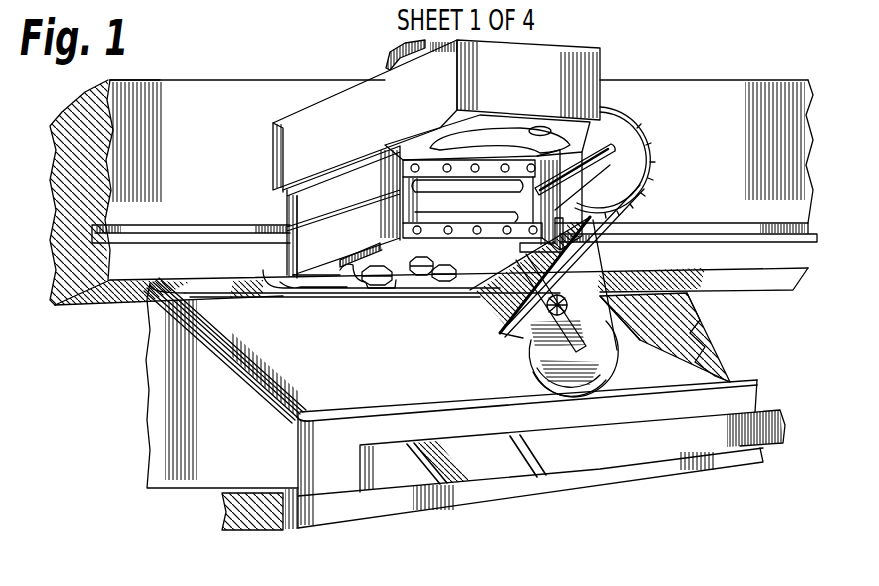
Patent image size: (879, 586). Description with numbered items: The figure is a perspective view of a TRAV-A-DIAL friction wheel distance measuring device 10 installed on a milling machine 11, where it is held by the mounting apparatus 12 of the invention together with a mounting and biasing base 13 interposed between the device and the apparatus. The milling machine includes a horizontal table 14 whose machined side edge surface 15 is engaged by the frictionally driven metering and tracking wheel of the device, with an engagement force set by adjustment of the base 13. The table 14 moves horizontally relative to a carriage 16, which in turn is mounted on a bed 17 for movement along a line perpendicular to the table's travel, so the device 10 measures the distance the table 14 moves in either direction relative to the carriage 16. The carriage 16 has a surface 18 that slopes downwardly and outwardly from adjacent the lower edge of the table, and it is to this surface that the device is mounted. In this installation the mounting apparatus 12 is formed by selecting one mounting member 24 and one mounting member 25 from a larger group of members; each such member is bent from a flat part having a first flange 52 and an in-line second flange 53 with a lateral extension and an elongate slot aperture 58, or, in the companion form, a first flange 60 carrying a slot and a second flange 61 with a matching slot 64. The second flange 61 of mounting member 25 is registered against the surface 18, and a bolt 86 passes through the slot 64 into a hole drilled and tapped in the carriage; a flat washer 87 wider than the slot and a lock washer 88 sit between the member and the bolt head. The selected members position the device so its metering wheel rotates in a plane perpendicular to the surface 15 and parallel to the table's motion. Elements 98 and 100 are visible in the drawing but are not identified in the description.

The friction wheel distance measuring device 10 is at (575, 64).
The milling machine 11 is at (186, 30).
The mounting apparatus 12 is at (647, 193).
The mounting and biasing base 13 is at (318, 233).
The horizontal table 14 is at (262, 80).
The machined side edge surface 15 is at (193, 150).
The carriage 16 is at (190, 450).
The bed 17 is at (306, 512).
The surface 18 is at (707, 342).
The mounting member 24 is at (630, 130).
The mounting member 25 is at (605, 352).
The first flange 52 is at (264, 272).
The second flange 53 is at (610, 203).
The elongate slot aperture 58 is at (613, 153).
The first flange 60 is at (570, 248).
The second flange 61 is at (598, 388).
The slot 64 is at (545, 377).
The bolt 86 is at (572, 300).
The flat washer 87 is at (582, 330).
The lock washer 88 is at (513, 337).
The nut 98 is at (357, 285).
The nut 100 is at (410, 275).